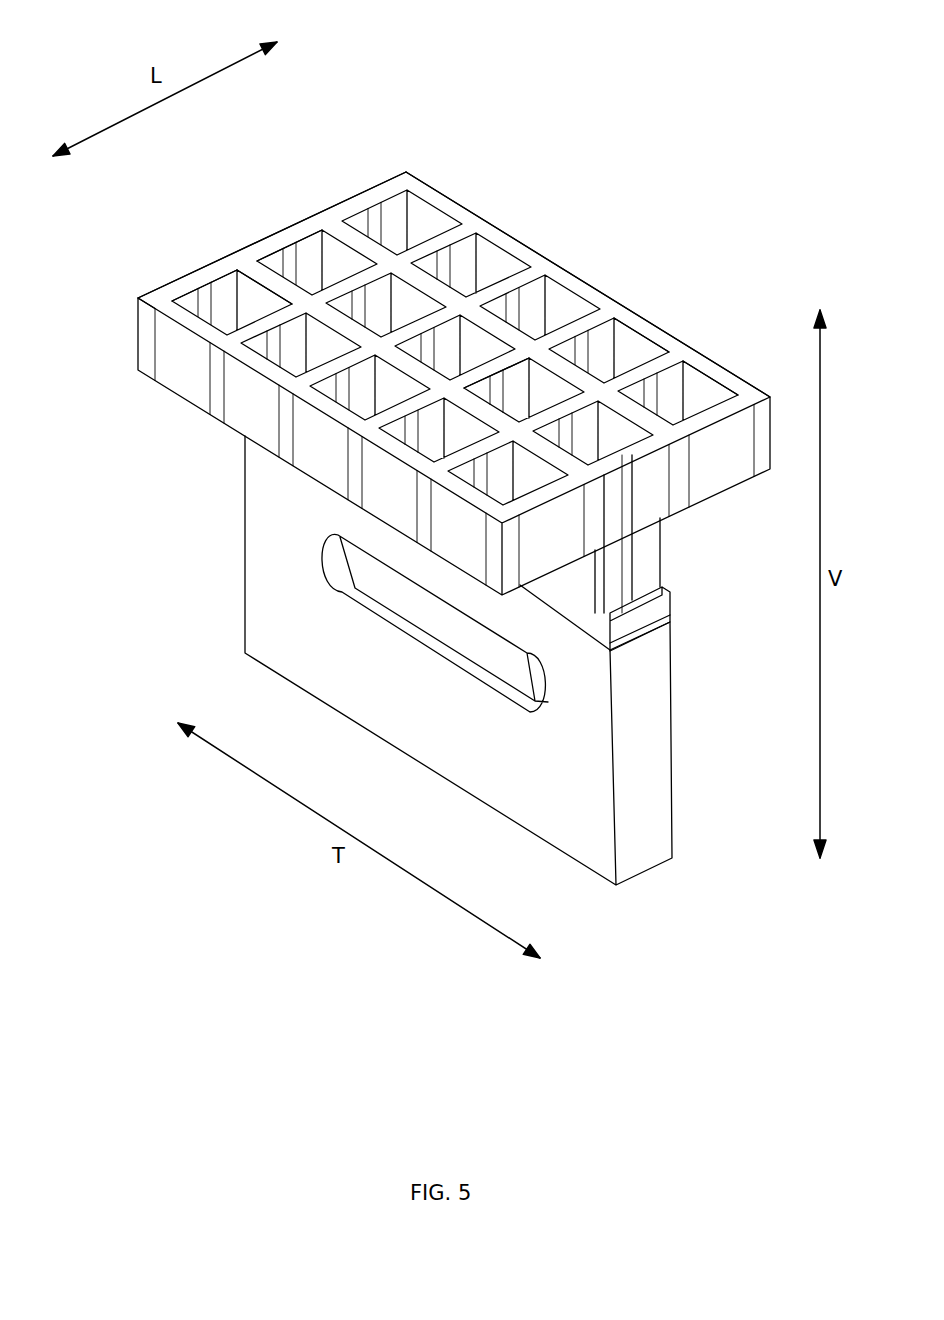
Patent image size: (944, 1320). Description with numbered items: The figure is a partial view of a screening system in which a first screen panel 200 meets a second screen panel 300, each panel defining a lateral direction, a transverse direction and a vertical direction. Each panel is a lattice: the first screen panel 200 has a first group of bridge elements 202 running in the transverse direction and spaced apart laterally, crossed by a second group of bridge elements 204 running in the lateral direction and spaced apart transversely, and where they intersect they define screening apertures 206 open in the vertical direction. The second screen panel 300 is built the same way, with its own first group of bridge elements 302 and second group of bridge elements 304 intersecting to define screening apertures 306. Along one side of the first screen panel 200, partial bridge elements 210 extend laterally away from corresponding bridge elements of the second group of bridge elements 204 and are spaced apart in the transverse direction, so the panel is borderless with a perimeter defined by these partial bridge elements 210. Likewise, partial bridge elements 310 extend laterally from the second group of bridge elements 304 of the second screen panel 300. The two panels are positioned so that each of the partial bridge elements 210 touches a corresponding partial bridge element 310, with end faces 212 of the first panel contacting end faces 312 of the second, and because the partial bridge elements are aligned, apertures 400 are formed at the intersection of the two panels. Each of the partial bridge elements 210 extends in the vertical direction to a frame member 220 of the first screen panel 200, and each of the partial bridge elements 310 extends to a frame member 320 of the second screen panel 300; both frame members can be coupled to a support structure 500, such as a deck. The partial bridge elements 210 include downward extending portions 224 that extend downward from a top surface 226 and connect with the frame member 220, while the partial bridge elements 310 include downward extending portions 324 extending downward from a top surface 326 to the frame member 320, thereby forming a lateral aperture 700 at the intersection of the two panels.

The first screen panel 200 is at (350, 188).
The first group of bridge elements 202 is at (480, 343).
The second group of bridge elements 204 is at (655, 375).
The screening apertures 206 is at (712, 392).
The partial bridge elements 210 is at (340, 253).
The end faces 212 is at (633, 520).
The frame member 220 is at (590, 565).
The downward extending portions 224 is at (650, 565).
The top surface 226 is at (630, 320).
The second screen panel 300 is at (197, 262).
The first group of bridge elements 302 is at (349, 430).
The second group of bridge elements 304 is at (250, 335).
The screening apertures 306 is at (205, 290).
The partial bridge elements 310 is at (230, 288).
The end faces 312 is at (641, 478).
The frame member 320 is at (667, 604).
The downward extending portions 324 is at (667, 632).
The top surface 326 is at (148, 298).
The apertures 400 is at (413, 300).
The support structure 500 is at (243, 612).
The lateral aperture 700 is at (542, 688).